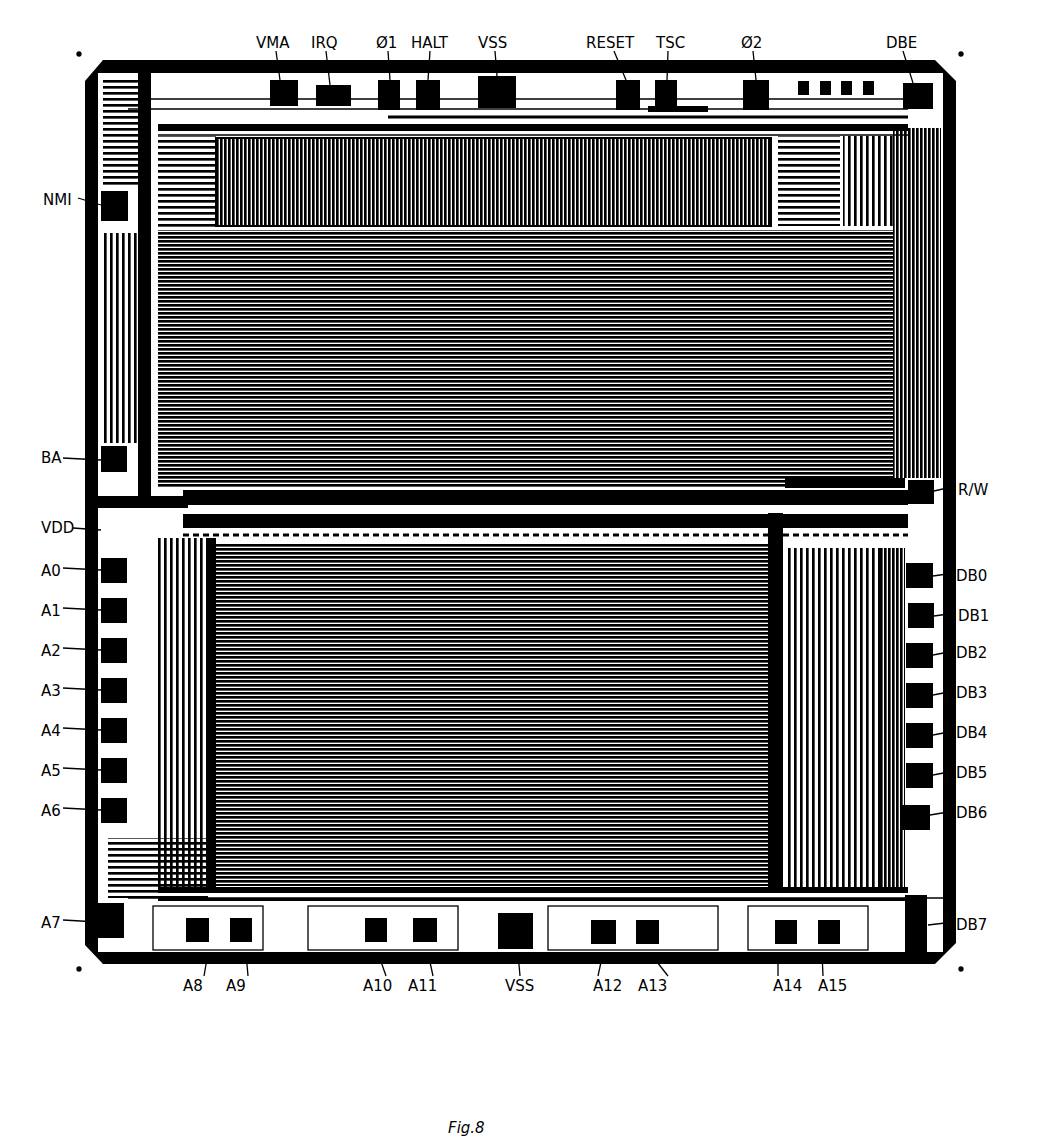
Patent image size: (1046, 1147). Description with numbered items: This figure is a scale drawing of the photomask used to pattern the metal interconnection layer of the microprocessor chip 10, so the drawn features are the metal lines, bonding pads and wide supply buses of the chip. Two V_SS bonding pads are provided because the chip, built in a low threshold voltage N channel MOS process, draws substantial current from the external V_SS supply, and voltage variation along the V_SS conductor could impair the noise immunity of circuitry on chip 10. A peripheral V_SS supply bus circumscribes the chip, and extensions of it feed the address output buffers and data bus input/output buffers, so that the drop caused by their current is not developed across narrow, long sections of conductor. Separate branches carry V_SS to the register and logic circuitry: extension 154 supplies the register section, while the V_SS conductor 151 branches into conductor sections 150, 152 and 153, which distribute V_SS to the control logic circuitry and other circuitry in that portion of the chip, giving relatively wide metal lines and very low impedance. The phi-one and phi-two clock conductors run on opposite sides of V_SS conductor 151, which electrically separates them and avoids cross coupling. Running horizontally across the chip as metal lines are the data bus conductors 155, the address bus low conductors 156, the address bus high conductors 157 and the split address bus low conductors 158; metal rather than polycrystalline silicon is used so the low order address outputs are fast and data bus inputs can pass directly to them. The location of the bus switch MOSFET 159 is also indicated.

The microprocessor chip 10 is at (131, 989).
The V_SS conductor extension 150 is at (760, 215).
The V_SS conductor 151 is at (684, 104).
The V_SS conductor extension 152 is at (880, 265).
The V_SS conductor extension 153 is at (688, 437).
The V_SS conductor extension 154 is at (750, 740).
The data bus conductors 155 is at (255, 835).
The address bus low conductors 156 is at (268, 845).
The address bus high conductors 157 is at (422, 855).
The split address bus low conductors 158 is at (572, 850).
The bus switch MOSFET 159 is at (505, 850).